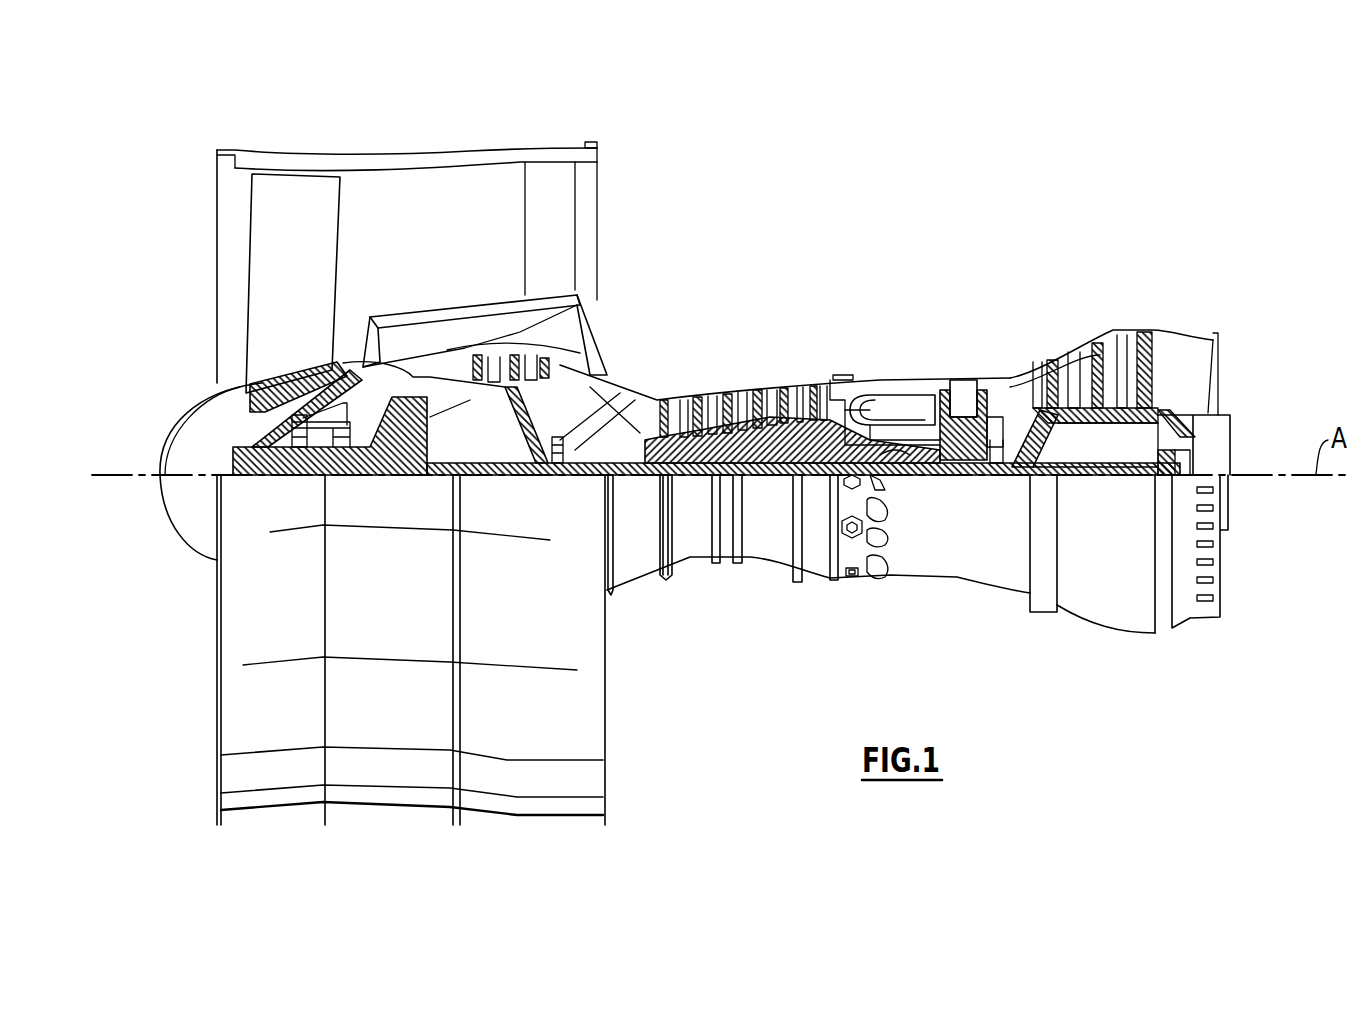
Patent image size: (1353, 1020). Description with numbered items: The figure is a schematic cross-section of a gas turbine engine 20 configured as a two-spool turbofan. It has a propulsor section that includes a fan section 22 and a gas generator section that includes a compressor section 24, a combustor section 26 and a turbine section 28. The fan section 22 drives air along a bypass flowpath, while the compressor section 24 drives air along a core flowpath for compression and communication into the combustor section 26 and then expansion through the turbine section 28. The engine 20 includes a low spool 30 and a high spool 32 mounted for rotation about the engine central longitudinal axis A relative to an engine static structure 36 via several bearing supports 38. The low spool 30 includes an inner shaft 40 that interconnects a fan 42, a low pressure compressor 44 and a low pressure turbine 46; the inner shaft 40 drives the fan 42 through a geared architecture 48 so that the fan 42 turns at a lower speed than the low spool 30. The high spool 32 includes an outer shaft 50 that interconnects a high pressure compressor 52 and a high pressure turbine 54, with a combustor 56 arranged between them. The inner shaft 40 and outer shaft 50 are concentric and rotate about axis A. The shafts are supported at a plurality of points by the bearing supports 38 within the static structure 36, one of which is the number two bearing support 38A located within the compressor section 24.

The gas turbine engine 20 is at (918, 190).
The fan section 22 is at (333, 138).
The compressor section 24 is at (661, 360).
The combustor section 26 is at (899, 310).
The turbine section 28 is at (1046, 286).
The low spool 30 is at (957, 482).
The high spool 32 is at (768, 442).
The engine static structure 36 is at (813, 584).
The bearing supports 38 is at (665, 527).
The #2 bearing support 38A is at (560, 463).
The inner shaft 40 is at (622, 470).
The fan 42 is at (305, 294).
The low pressure compressor 44 is at (533, 360).
The low pressure turbine 46 is at (1097, 336).
The geared architecture 48 is at (420, 453).
The outer shaft 50 is at (893, 452).
The high pressure compressor 52 is at (750, 390).
The high pressure turbine 54 is at (968, 374).
The combustor 56 is at (897, 405).